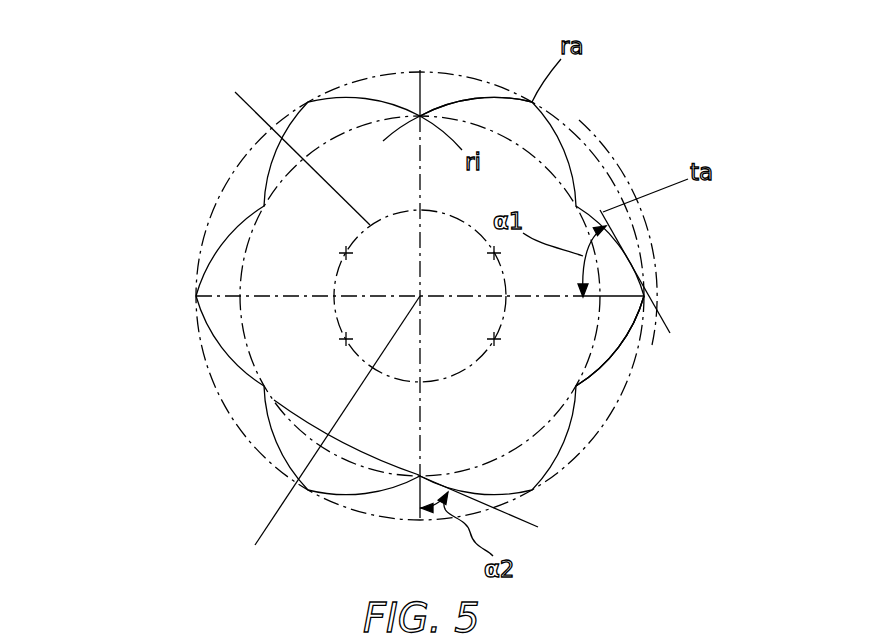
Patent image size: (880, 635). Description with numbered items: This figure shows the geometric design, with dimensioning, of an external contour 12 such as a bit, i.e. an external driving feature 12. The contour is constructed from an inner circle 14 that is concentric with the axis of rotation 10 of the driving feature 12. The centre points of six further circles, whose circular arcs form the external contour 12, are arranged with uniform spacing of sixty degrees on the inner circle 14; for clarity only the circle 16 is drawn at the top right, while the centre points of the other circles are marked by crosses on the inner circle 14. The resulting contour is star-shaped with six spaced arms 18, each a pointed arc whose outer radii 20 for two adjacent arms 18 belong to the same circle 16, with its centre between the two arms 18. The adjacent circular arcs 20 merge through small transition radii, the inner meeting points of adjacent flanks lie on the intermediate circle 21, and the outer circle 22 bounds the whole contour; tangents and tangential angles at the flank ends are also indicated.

The axis of rotation 10 is at (327, 435).
The external driving feature 12 is at (158, 130).
The concentric inner circle 14 is at (354, 225).
The circle, flank radius 16 is at (598, 135).
The spaced arms 18 is at (612, 333).
The radius 20 is at (483, 97).
The intermediate circle 21 is at (242, 268).
The outer circle 22 is at (213, 386).